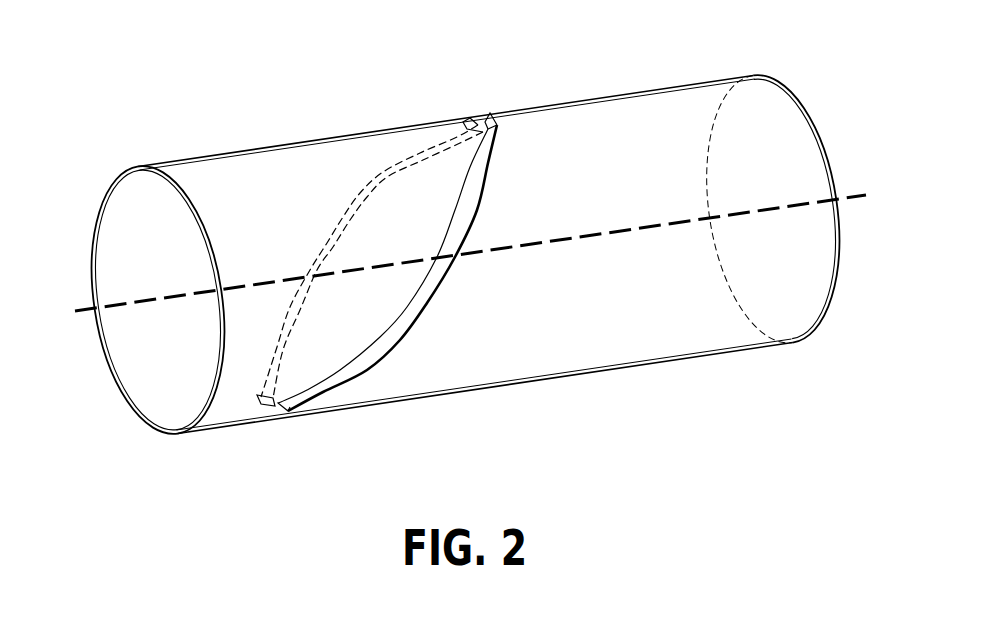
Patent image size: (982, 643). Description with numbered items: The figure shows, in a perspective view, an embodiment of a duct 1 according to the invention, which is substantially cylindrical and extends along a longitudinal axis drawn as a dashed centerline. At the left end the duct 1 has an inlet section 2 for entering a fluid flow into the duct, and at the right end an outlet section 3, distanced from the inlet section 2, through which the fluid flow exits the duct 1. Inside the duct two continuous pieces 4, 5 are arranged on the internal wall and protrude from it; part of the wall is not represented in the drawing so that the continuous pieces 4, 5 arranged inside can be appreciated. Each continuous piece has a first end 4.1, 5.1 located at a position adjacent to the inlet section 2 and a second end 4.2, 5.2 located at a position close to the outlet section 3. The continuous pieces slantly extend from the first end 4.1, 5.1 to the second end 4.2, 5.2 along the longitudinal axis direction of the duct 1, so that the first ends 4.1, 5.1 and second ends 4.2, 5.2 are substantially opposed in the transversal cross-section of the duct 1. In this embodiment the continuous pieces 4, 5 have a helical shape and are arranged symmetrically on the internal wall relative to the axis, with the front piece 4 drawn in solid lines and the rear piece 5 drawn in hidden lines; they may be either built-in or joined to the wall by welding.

The duct 1 is at (148, 462).
The inlet section 2 is at (137, 232).
The outlet section 3 is at (773, 122).
The continuous piece 4 is at (387, 340).
The first end of continuous piece 4.1 is at (279, 405).
The second end of continuous piece 4.2 is at (491, 112).
The continuous piece 5 is at (355, 203).
The first end of continuous piece 5.1 is at (262, 408).
The second end of continuous piece 5.2 is at (466, 117).